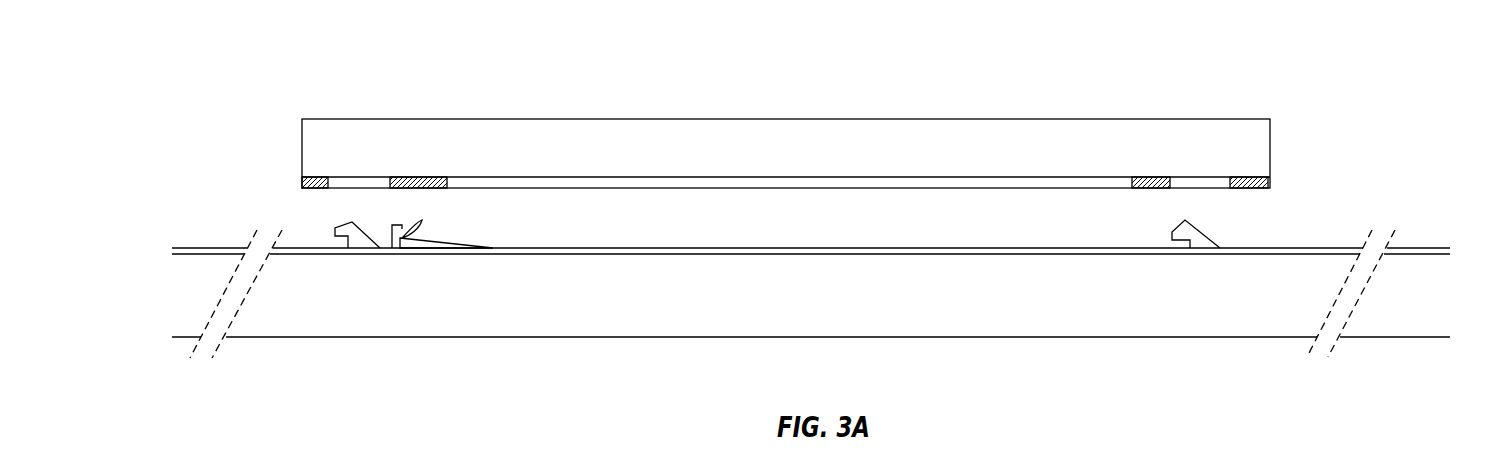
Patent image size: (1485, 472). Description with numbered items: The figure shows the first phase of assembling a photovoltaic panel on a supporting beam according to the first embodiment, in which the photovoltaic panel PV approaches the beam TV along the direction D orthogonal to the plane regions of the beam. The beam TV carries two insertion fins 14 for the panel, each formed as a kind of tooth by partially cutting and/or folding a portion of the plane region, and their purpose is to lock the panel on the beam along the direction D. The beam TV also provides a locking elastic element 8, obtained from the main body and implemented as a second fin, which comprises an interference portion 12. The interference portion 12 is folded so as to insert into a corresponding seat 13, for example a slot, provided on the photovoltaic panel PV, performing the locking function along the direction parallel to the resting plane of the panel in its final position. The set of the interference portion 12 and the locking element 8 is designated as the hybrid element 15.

The locking elastic element 8 is at (430, 249).
The interference portion 12 is at (404, 228).
The seat 13 is at (353, 177).
The insertion fin 14 is at (330, 227).
The hybrid element 15 is at (445, 233).
The supporting beam TV is at (170, 220).
The photovoltaic panel PV is at (1285, 113).
The direction D is at (286, 188).